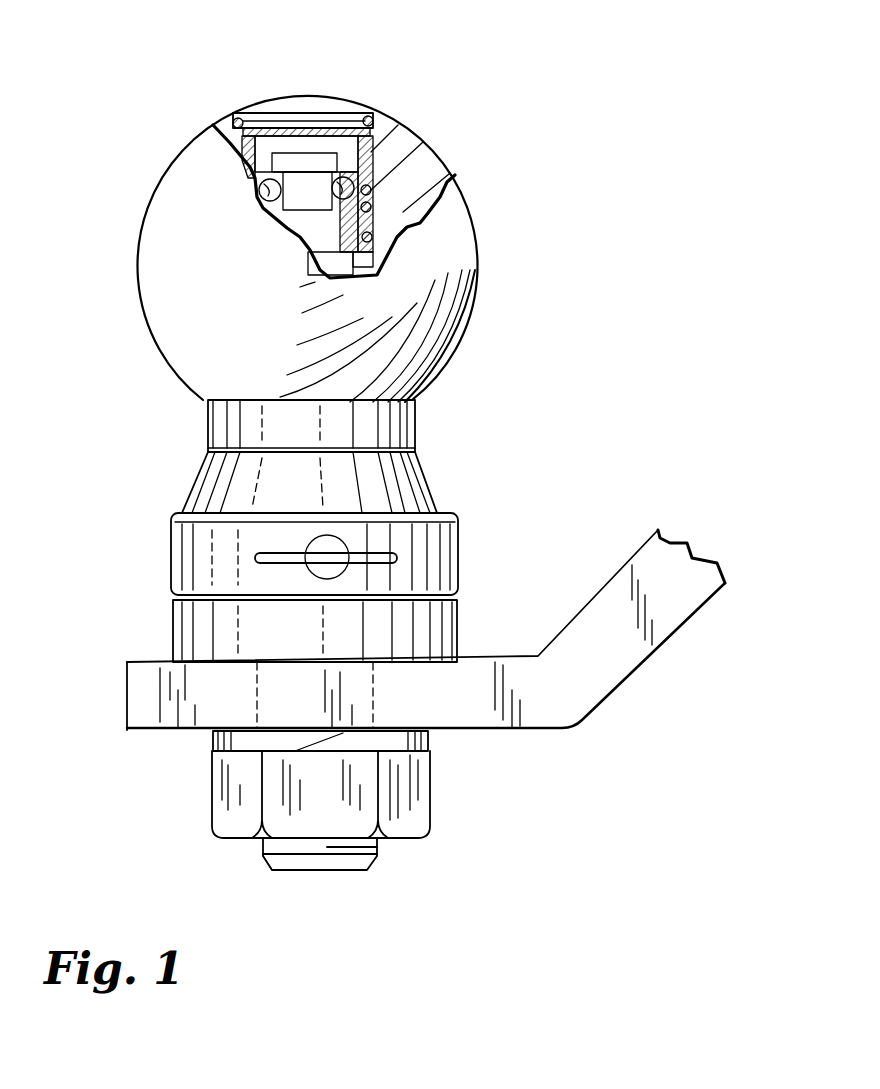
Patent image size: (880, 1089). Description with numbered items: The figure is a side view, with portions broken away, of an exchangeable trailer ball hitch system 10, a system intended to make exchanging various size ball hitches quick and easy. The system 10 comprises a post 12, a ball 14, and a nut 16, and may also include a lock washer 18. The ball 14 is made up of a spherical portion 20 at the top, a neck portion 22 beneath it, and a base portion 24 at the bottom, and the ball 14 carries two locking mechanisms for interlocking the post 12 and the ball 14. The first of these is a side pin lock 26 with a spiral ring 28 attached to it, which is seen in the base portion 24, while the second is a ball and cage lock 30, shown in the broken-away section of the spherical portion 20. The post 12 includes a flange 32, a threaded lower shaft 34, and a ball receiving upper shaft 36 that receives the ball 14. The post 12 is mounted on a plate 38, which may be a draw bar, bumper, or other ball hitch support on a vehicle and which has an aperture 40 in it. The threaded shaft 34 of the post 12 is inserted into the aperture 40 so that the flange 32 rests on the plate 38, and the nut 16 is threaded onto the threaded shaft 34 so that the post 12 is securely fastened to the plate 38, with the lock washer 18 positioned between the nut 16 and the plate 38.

The exchangeable trailer ball hitch system 10 is at (150, 360).
The post 12 is at (333, 877).
The ball 14 is at (538, 100).
The nut 16 is at (434, 808).
The lock washer 18 is at (432, 742).
The spherical portion 20 is at (180, 173).
The neck portion 22 is at (212, 420).
The base portion 24 is at (177, 550).
The side pin lock 26 is at (310, 544).
The spiral ring 28 is at (395, 553).
The ball and cage lock 30 is at (378, 153).
The flange 32 is at (175, 623).
The threaded lower shaft 34 is at (262, 857).
The ball receiving upper shaft 36 is at (287, 165).
The plate 38 is at (130, 707).
The aperture 40 is at (378, 694).